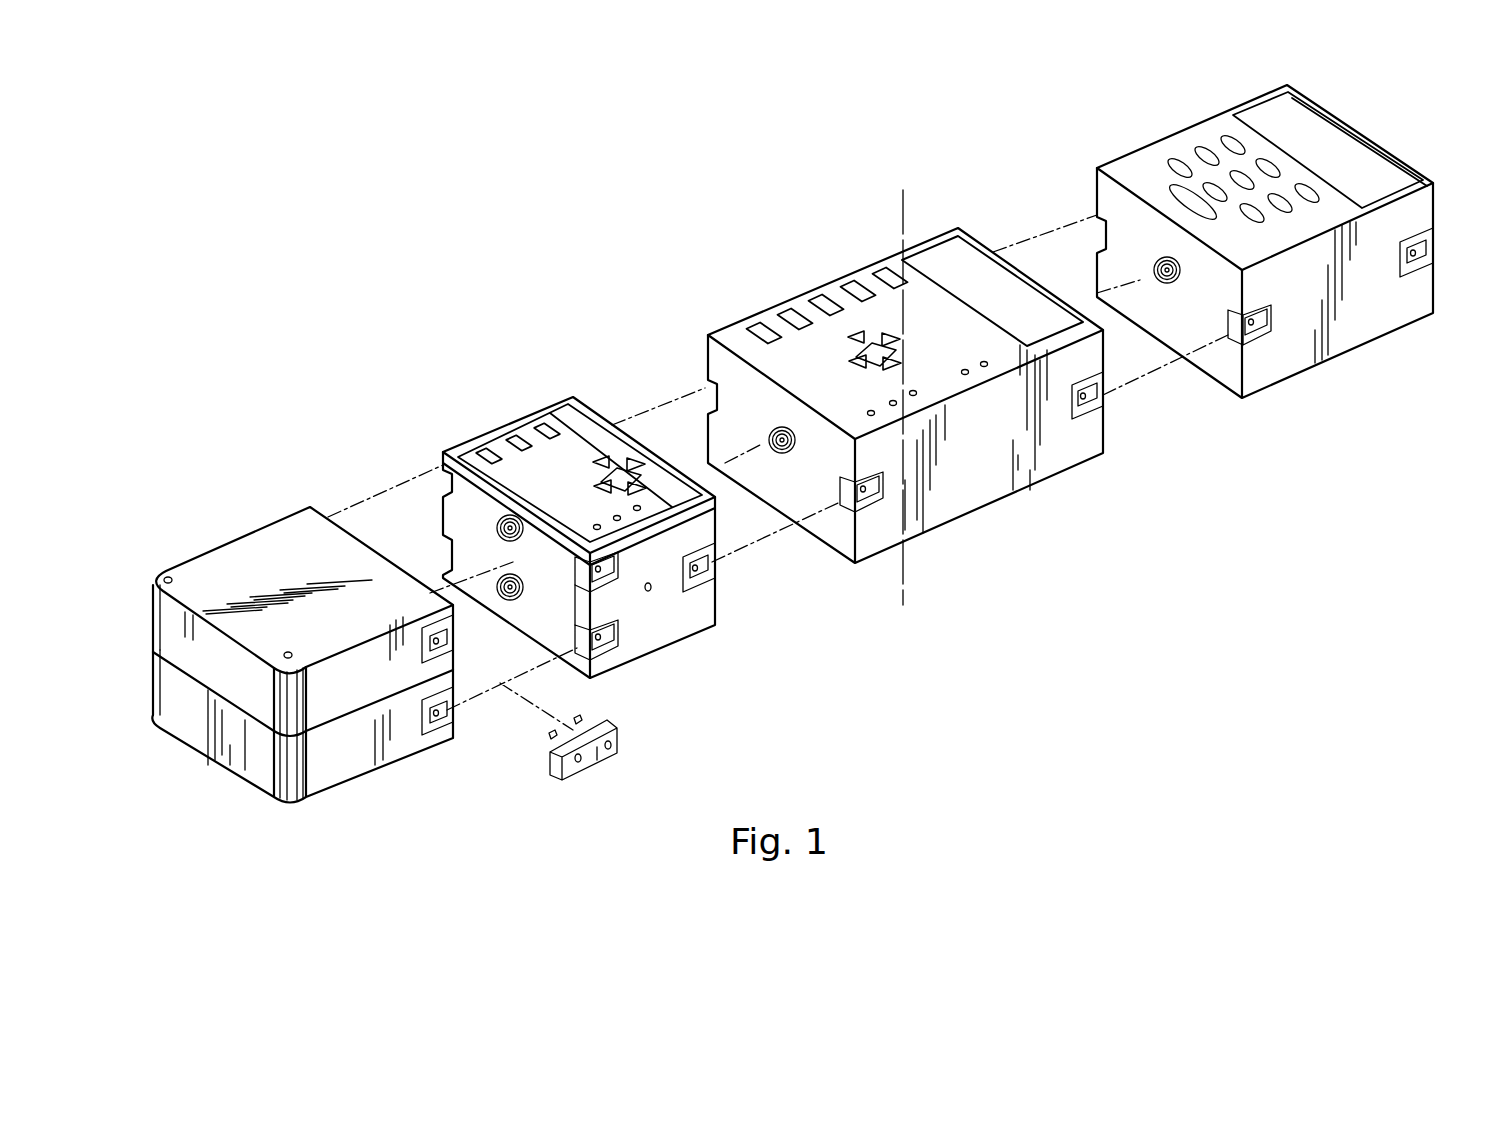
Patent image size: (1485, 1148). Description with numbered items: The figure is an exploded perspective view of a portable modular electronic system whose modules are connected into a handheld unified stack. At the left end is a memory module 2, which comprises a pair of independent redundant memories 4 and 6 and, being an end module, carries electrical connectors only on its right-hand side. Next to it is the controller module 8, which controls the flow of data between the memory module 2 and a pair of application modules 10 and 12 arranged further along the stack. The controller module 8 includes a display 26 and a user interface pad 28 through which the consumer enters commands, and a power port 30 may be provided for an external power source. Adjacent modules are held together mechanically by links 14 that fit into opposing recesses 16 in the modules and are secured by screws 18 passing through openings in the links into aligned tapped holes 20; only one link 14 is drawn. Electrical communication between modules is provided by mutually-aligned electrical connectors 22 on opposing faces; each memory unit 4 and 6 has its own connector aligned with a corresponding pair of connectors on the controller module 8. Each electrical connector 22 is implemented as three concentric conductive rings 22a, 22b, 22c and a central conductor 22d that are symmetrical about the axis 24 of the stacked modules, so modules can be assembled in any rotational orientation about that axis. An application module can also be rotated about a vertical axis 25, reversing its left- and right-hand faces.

The memory module 2 is at (345, 800).
The independent redundant memory 4 is at (193, 652).
The independent redundant memory 6 is at (249, 768).
The controller module 8 is at (657, 658).
The application module 10 is at (989, 518).
The application module 12 is at (1313, 380).
The link 14 is at (548, 768).
The recess 16 is at (577, 593).
The screw 18 is at (581, 717).
The tapped hole 20 is at (443, 655).
The electrical connector 22 is at (497, 579).
The concentric conductive ring 22a is at (770, 438).
The concentric conductive ring 22b is at (783, 455).
The concentric conductive ring 22c is at (794, 452).
The central conductor 22d is at (789, 427).
The axis 24 is at (1158, 280).
The vertical axis 25 is at (900, 232).
The display 26 is at (568, 410).
The user interface pad 28 is at (522, 445).
The power port 30 is at (651, 591).